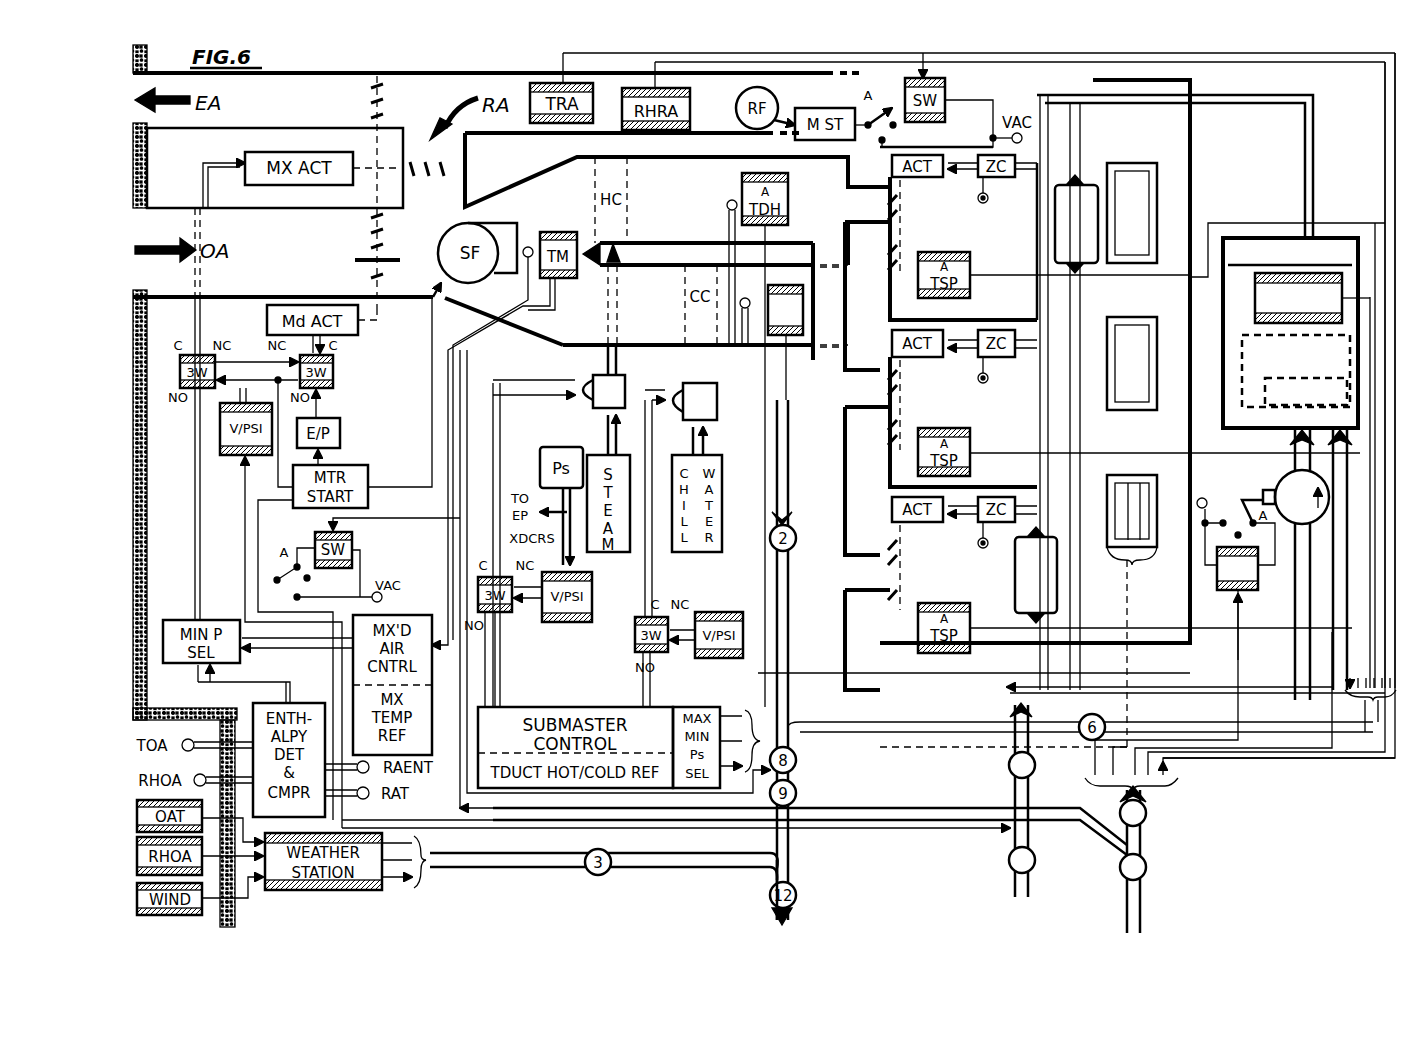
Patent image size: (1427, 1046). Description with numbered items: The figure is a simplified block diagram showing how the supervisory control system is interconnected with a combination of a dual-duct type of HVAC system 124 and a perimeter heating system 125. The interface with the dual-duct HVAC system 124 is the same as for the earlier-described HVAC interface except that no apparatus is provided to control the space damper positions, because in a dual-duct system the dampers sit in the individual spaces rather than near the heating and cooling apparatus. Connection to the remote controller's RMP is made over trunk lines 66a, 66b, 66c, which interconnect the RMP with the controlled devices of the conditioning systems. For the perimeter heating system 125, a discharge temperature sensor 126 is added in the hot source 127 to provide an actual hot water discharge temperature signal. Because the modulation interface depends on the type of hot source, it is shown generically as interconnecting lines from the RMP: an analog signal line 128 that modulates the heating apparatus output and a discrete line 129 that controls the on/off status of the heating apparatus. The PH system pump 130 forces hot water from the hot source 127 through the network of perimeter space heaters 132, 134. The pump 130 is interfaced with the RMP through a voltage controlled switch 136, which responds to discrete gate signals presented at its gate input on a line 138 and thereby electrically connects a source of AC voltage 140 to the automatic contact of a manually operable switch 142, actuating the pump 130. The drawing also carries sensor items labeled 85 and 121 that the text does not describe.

The dual-duct type of HVAC system 124 is at (445, 50).
The perimeter heating system 125 is at (1333, 130).
The discharge air temperature sensor 85 is at (747, 298).
The discharge air temperature transmitter 121 is at (776, 286).
The perimeter space heater 132 is at (1098, 220).
The hot source 127 is at (1258, 238).
The discharge temperature sensor 126 is at (1255, 300).
The analog signal line 128 is at (1252, 382).
The discrete line 129 is at (1326, 406).
The PH system pump 130 is at (1290, 478).
The manually operable switch 142 is at (1238, 492).
The source of AC voltage 140 is at (1200, 508).
The perimeter space heater 134 is at (1015, 578).
The voltage controlled switch 136 is at (1252, 592).
The line 138 is at (1240, 652).
The trunk line 66a is at (792, 878).
The trunk line 66b is at (1015, 882).
The trunk line 66c is at (1140, 882).